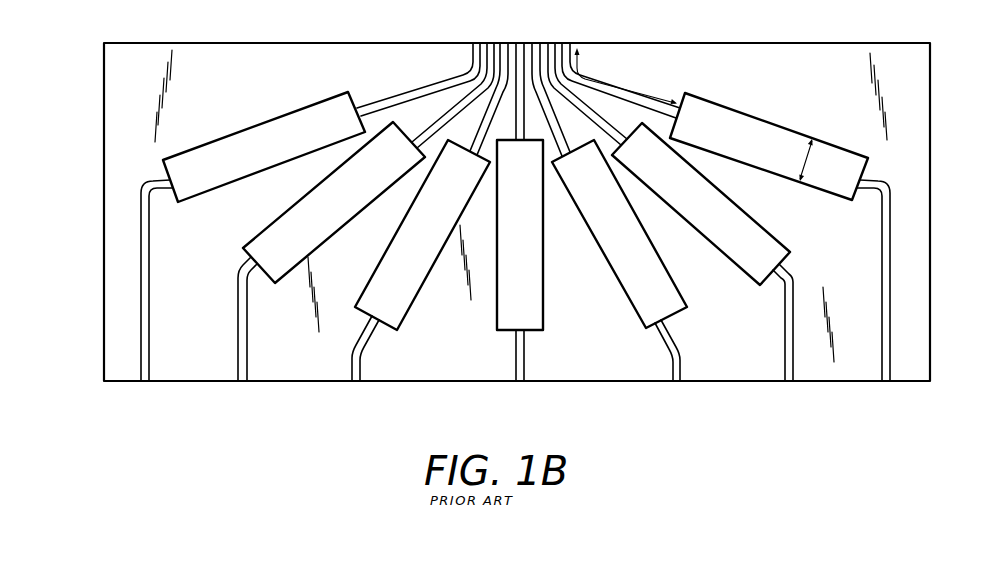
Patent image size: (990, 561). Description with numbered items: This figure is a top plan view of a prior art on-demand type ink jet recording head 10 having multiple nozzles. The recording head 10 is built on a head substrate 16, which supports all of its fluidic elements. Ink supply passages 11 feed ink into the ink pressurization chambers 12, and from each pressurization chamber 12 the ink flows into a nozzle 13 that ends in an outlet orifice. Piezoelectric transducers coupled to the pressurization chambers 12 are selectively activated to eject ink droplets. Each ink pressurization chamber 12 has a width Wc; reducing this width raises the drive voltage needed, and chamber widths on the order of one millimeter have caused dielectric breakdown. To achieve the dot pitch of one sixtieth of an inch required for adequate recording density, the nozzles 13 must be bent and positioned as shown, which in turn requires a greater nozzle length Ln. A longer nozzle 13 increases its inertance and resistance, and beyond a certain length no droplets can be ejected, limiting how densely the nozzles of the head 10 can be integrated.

The ink jet recording head 10 is at (161, 36).
The ink supply passages 11 is at (141, 349).
The ink pressurization chambers 12 is at (216, 182).
The nozzles 13 is at (466, 64).
The head substrate 16 is at (113, 302).